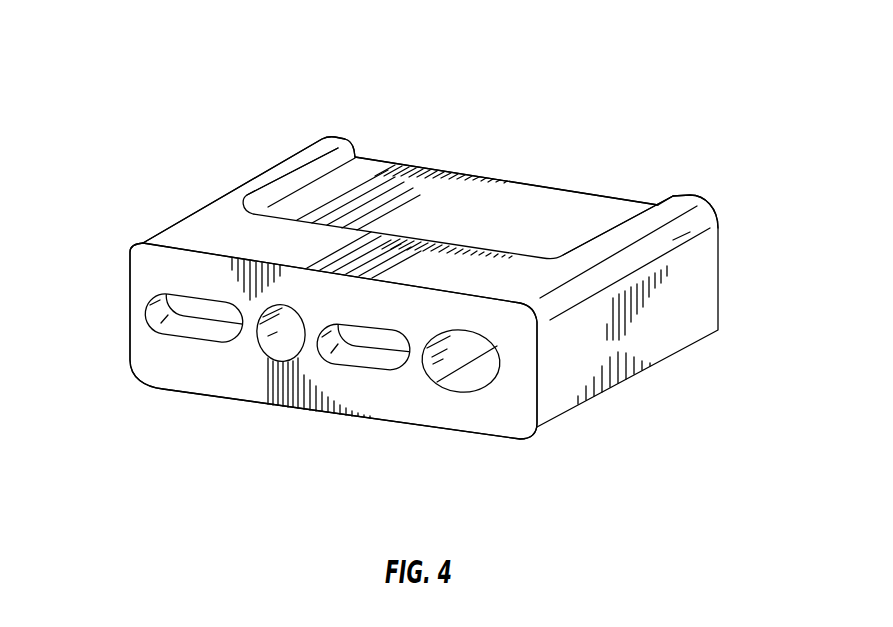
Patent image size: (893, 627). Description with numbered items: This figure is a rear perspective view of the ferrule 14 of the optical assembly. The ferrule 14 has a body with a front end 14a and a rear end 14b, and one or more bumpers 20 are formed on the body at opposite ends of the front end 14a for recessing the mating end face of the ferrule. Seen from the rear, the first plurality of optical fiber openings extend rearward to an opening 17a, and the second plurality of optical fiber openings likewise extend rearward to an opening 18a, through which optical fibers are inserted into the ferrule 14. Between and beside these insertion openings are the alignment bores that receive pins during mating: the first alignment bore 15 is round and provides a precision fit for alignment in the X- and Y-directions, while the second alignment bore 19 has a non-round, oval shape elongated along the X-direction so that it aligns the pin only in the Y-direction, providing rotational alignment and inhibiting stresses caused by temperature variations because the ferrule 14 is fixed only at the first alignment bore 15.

The ferrule 14 is at (154, 163).
The front end 14a is at (523, 182).
The rear end 14b is at (472, 415).
The bumpers 20 is at (335, 137).
The opening 18a is at (157, 304).
The first alignment bore 15 is at (272, 343).
The opening 17a is at (367, 356).
The second alignment bore 19 is at (480, 363).